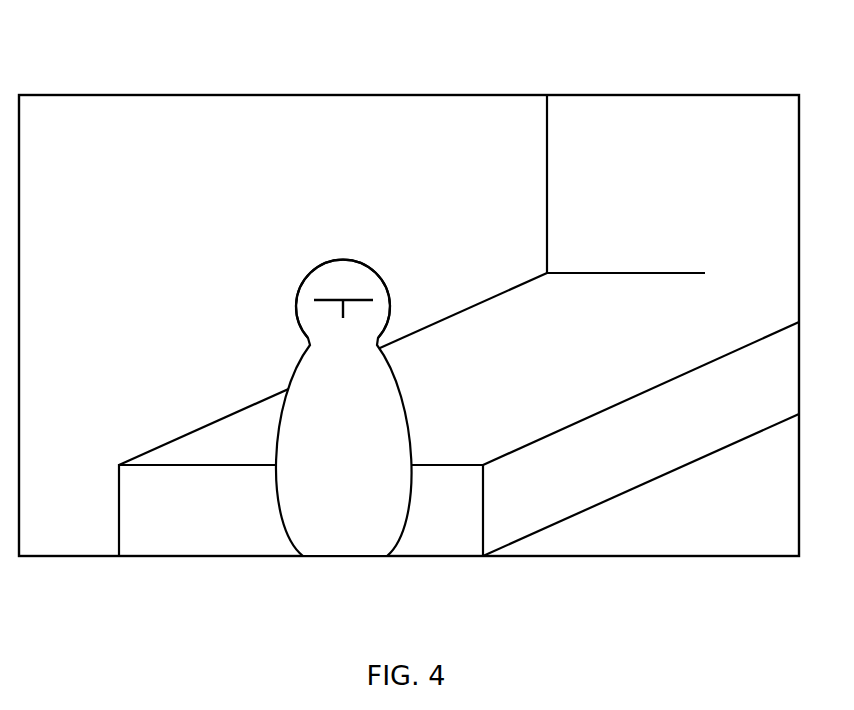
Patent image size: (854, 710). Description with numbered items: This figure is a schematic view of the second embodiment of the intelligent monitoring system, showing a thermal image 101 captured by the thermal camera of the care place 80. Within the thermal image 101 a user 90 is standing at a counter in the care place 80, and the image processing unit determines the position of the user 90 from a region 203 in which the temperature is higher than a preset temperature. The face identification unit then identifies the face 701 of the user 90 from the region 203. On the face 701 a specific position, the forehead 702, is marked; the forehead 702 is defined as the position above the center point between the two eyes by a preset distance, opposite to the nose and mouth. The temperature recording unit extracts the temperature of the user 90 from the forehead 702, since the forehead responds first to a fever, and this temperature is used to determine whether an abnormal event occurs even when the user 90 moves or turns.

The thermal image 101 is at (118, 96).
The care place 80 is at (651, 184).
The region 203 is at (344, 408).
The user 90 is at (294, 308).
The face 701 is at (371, 288).
The forehead 702 is at (342, 283).